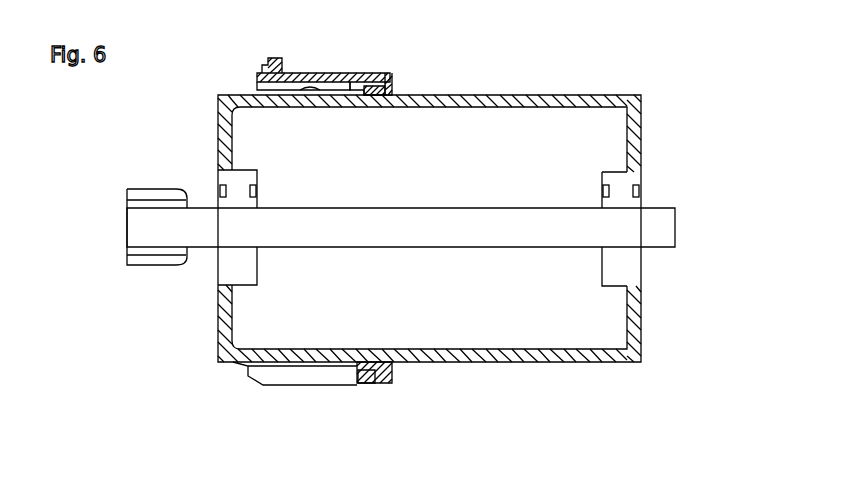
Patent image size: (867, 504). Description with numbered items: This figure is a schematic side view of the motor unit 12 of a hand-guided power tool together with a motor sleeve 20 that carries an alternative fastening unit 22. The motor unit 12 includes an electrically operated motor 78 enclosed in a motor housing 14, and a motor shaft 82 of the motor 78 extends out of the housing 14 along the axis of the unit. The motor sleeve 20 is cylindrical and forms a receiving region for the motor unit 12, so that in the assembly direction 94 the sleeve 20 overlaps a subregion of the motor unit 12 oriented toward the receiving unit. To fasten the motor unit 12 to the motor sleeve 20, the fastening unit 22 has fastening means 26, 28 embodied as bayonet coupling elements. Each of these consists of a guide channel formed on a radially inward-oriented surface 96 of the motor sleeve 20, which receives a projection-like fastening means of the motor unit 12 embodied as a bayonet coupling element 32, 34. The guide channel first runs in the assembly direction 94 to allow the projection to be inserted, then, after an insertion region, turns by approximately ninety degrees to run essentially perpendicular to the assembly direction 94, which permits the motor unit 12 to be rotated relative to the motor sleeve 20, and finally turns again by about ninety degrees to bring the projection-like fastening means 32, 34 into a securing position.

The motor unit 12 is at (490, 125).
The motor housing 14 is at (597, 100).
The motor sleeve 20 is at (330, 72).
The fastening unit 22 is at (387, 395).
The fastening means 26 is at (375, 385).
The fastening means 28 is at (380, 72).
The bayonet coupling element 32 is at (360, 366).
The bayonet coupling element 34 is at (393, 90).
The electrically operated motor 78 is at (607, 138).
The motor shaft 82 is at (665, 222).
The assembly direction 94 is at (577, 397).
The radially inward-oriented surface 96 is at (291, 88).